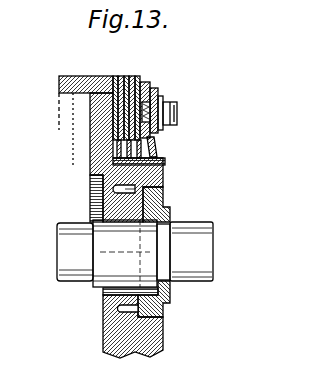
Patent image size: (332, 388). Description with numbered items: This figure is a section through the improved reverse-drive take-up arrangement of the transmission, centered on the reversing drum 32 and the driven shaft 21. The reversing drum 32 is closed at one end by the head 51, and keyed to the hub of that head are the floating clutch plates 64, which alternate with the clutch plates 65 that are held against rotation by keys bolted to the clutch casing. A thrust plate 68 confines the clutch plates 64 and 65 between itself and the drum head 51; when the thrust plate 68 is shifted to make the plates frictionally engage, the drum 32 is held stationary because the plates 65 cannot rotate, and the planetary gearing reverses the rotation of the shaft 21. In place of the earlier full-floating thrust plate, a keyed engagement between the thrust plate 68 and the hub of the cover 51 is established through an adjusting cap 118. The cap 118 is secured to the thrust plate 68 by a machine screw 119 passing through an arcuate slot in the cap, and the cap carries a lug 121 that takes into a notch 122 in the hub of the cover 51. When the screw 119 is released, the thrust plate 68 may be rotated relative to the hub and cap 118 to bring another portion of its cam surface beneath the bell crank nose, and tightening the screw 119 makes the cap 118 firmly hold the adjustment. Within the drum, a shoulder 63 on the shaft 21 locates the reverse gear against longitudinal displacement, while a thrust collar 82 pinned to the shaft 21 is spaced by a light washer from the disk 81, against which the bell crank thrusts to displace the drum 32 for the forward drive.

The reversing drum 32 is at (73, 76).
The head 51 is at (92, 160).
The clutch plates 65 is at (118, 76).
The floating clutch plates 64 is at (146, 83).
The thrust plate 68 is at (155, 97).
The adjusting cap 118 is at (162, 126).
The machine screw 119 is at (176, 114).
The lug 121 is at (156, 147).
The notch 122 is at (158, 160).
The thrust collar 82 is at (165, 208).
The shoulder 63 is at (96, 263).
The driven shaft 21 is at (210, 248).
The disk 81 is at (118, 316).